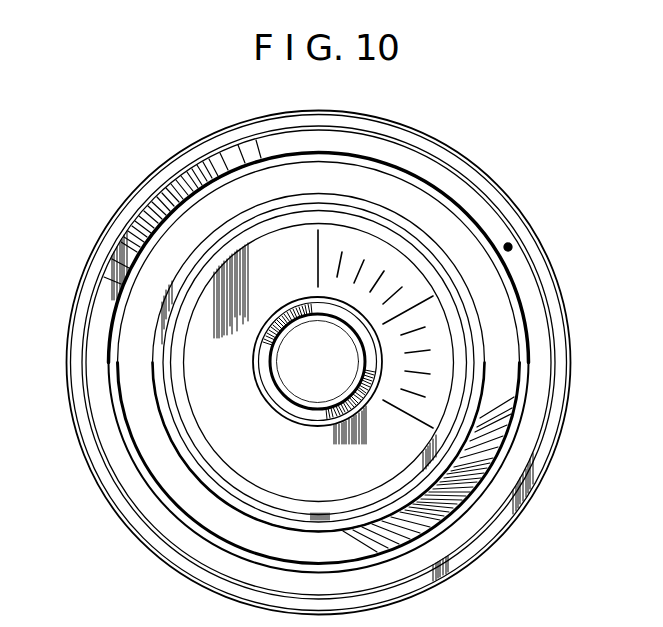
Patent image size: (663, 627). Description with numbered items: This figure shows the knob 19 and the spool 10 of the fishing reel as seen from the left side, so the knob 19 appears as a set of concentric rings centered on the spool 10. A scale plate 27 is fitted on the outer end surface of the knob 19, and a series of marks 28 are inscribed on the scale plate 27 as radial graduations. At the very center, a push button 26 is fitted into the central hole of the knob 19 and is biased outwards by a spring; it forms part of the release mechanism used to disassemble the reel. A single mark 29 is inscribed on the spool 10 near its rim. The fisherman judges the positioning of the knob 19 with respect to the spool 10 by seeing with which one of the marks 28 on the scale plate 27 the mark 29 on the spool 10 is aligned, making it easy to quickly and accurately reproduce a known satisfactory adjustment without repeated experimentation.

The spool 10 is at (141, 188).
The knob 19 is at (153, 272).
The push button 26 is at (284, 366).
The scale plate 27 is at (202, 417).
The marks 28 is at (433, 297).
The mark 29 is at (512, 248).